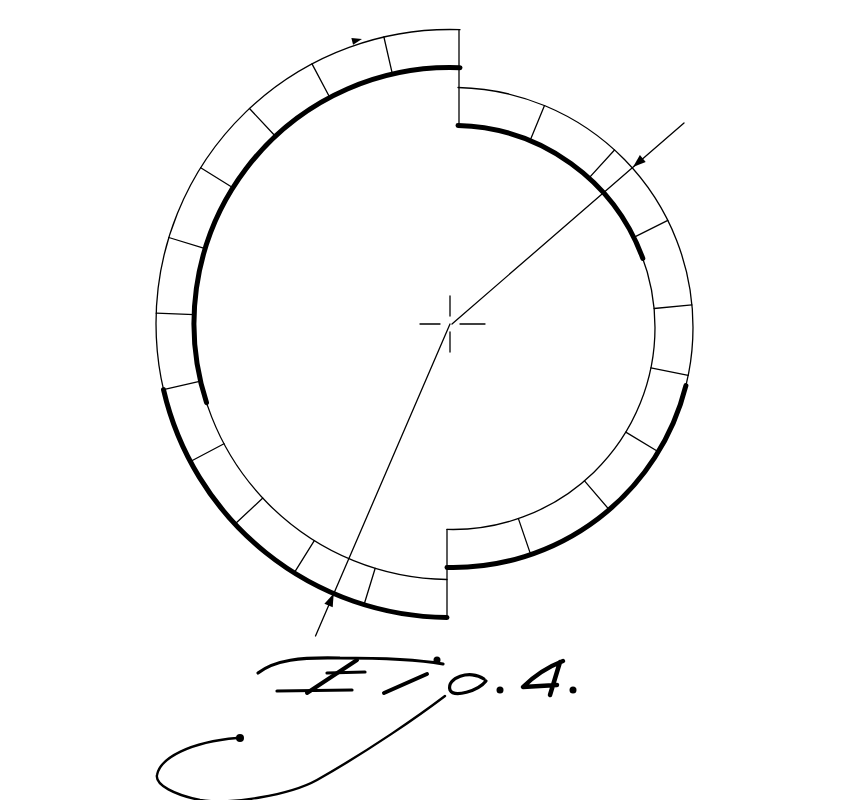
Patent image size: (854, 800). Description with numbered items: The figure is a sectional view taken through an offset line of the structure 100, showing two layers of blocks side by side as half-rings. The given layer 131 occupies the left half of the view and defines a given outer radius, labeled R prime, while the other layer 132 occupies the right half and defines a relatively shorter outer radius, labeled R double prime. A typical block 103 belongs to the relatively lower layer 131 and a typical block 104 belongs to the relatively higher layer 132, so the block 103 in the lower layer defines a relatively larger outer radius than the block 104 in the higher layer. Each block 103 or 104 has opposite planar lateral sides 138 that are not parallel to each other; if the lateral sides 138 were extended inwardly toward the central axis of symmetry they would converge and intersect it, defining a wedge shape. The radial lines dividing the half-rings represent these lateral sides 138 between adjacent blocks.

The sleeve assembly 100 is at (165, 171).
The block 103 is at (214, 502).
The block 104 is at (626, 494).
The layer 131 is at (168, 438).
The layer 132 is at (688, 428).
The lateral sides 138 is at (166, 325).